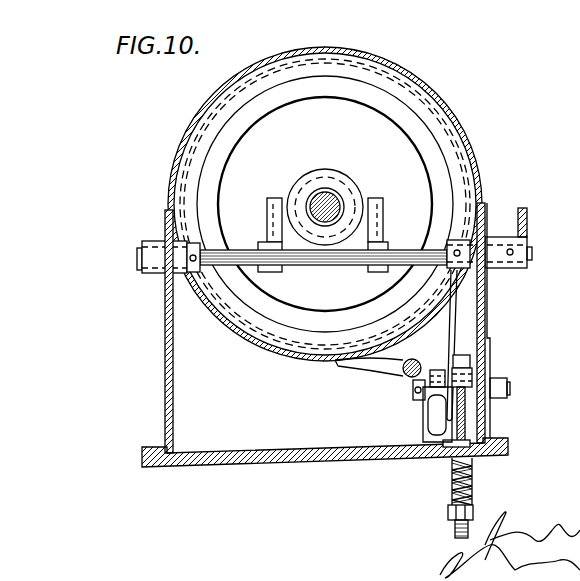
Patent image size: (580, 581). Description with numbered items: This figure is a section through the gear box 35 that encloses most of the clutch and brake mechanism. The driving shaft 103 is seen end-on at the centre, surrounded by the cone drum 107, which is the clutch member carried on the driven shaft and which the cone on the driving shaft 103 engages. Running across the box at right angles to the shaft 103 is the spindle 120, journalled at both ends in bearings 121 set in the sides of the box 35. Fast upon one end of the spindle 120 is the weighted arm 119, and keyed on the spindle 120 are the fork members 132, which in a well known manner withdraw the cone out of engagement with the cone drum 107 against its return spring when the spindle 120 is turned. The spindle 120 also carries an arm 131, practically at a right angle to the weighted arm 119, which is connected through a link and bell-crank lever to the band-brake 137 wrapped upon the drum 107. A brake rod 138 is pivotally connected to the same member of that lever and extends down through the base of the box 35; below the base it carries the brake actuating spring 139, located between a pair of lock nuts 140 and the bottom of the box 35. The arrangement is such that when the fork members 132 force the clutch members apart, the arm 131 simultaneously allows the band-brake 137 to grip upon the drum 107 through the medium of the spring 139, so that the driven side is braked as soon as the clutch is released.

The gear box 35 is at (402, 66).
The driving shaft 103 is at (322, 200).
The cone drum 107 is at (303, 350).
The weighted arm 119 is at (527, 222).
The spindle 120 is at (320, 263).
The bearings 121 is at (145, 274).
The arm 131 is at (449, 347).
The fork members 132 is at (268, 212).
The band-brake 137 is at (395, 372).
The brake rod 138 is at (465, 470).
The brake actuating spring 139 is at (453, 492).
The lock nuts 140 is at (473, 512).